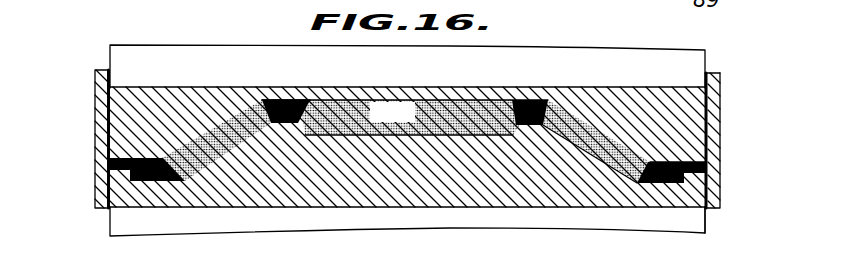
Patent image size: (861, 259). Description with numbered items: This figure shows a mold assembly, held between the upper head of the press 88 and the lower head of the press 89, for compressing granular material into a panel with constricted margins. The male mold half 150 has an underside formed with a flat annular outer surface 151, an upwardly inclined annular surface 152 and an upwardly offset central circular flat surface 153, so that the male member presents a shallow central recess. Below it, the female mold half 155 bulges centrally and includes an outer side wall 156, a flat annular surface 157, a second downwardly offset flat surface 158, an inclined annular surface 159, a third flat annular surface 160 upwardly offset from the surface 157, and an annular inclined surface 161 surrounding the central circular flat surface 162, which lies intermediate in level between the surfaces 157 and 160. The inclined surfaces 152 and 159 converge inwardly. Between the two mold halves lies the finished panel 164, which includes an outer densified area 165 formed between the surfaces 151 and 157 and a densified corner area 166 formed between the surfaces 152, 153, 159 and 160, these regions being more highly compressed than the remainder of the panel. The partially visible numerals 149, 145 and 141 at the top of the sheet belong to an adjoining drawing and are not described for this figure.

The upper head of the press 88 is at (612, 29).
The lower head of the press 89 is at (638, 223).
The male mold half 150 is at (674, 87).
The flat annular outer surface 151 is at (668, 172).
The upwardly inclined annular surface 152 is at (610, 135).
The upwardly offset central circular flat surface 153 is at (452, 100).
The female mold half 155 is at (723, 177).
The outer side wall 156 is at (720, 95).
The flat annular surface 157 is at (707, 209).
The second downwardly offset flat surface 158 is at (671, 184).
The inclined annular surface 159 is at (595, 160).
The third flat annular surface 160 is at (284, 123).
The annular inclined surface 161 is at (513, 136).
The central circular flat surface 162 is at (447, 136).
The finished panel 164 is at (412, 122).
The outer densified area 165 is at (124, 162).
The densified corner area 166 is at (279, 100).
The adjacent figure numeral 149 is at (212, 6).
The adjacent figure numeral 145 is at (540, 6).
The adjacent figure numeral 141 is at (647, 7).